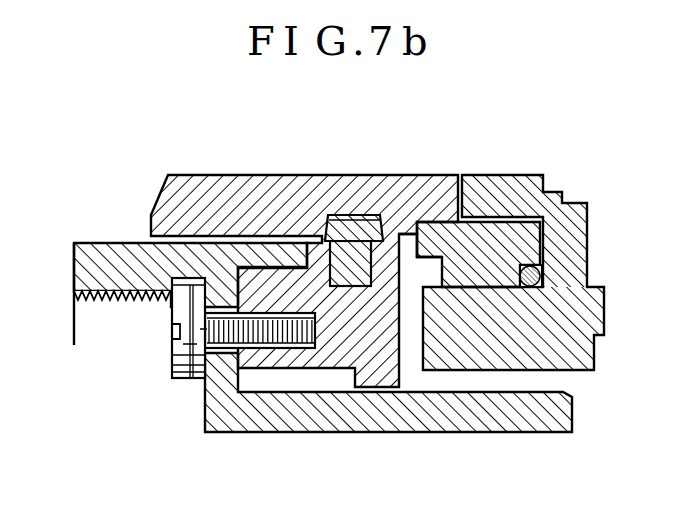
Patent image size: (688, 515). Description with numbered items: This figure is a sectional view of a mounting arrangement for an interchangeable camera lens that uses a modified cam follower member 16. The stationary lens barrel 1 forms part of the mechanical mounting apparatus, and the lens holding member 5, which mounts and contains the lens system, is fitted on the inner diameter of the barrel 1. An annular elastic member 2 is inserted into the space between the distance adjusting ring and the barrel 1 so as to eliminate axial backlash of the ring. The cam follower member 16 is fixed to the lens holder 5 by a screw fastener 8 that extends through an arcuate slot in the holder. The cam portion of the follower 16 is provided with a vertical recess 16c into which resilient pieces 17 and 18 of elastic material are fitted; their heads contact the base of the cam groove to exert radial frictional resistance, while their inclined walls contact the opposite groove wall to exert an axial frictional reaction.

The lens barrel 1 is at (520, 358).
The annular elastic member 2 is at (546, 268).
The lens holding member 5 is at (354, 428).
The screw fastener 8 is at (177, 358).
The cam follower member 16 is at (385, 261).
The vertical recess 16c is at (419, 233).
The resilient piece 17 is at (350, 203).
The resilient piece 18 is at (337, 213).